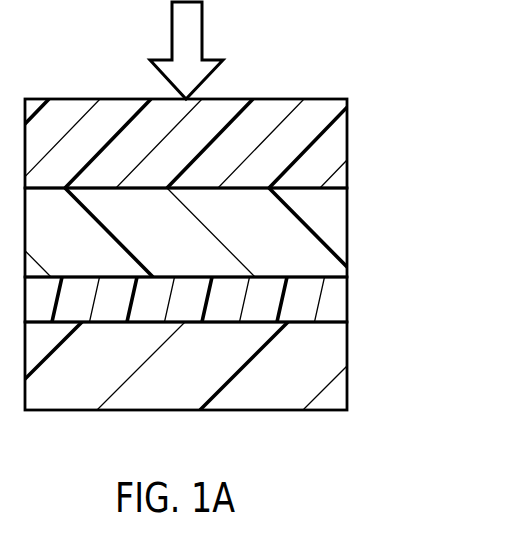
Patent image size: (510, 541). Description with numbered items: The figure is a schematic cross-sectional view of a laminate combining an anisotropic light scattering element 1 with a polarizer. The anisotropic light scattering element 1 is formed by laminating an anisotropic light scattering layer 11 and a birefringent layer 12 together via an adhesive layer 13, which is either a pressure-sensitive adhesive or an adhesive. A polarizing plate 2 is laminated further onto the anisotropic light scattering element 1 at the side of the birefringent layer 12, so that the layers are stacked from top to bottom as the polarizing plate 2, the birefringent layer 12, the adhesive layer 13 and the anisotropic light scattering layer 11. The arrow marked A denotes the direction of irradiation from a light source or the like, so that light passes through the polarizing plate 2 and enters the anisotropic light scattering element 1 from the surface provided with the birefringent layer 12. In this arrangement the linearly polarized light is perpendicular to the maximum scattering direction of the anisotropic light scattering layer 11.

The direction of irradiation A is at (190, 34).
The anisotropic light scattering element 1 is at (236, 299).
The polarizing plate 2 is at (330, 151).
The anisotropic light scattering layer 11 is at (211, 366).
The birefringent layer 12 is at (330, 238).
The adhesive layer 13 is at (330, 299).